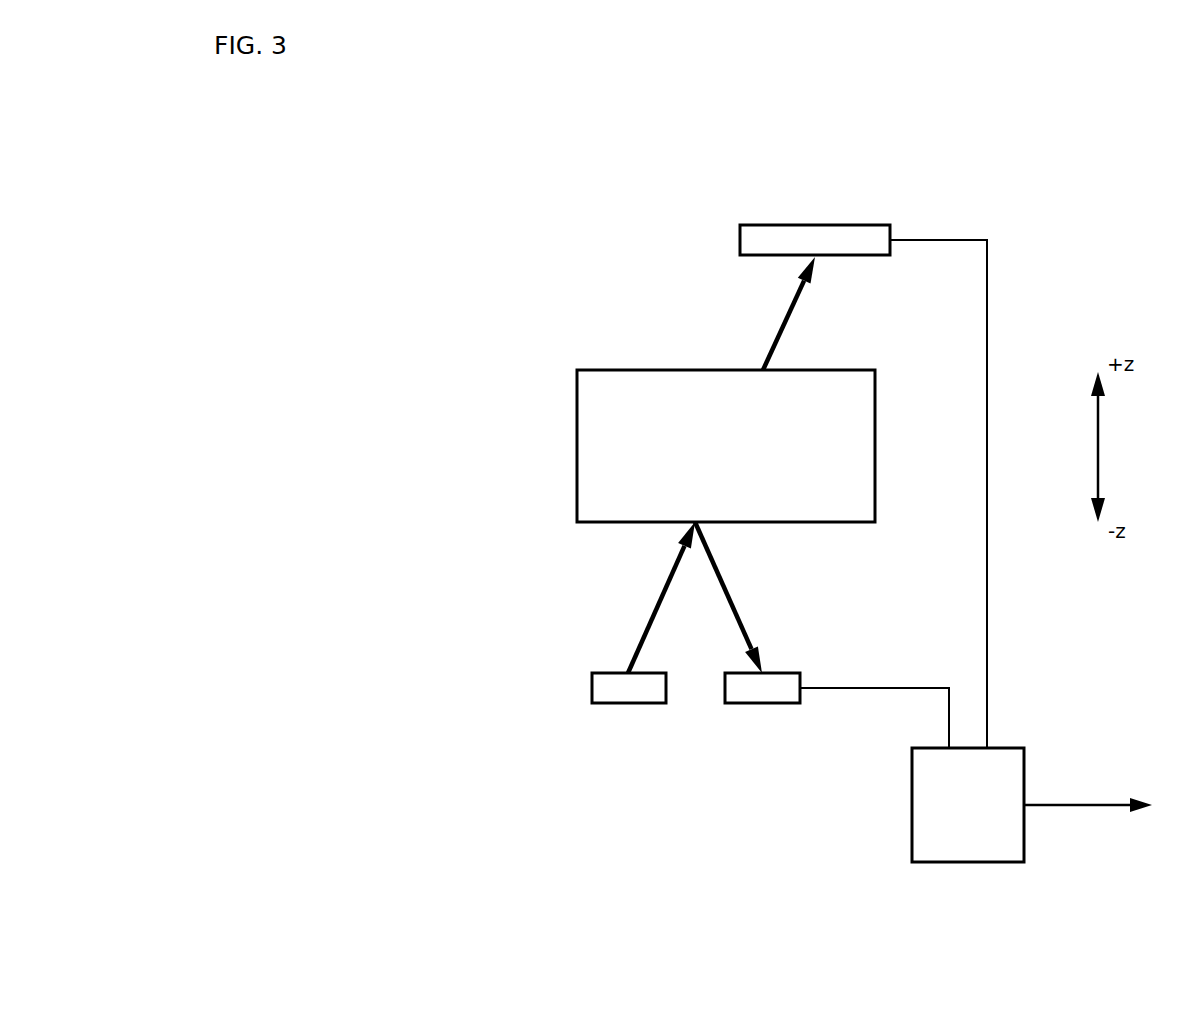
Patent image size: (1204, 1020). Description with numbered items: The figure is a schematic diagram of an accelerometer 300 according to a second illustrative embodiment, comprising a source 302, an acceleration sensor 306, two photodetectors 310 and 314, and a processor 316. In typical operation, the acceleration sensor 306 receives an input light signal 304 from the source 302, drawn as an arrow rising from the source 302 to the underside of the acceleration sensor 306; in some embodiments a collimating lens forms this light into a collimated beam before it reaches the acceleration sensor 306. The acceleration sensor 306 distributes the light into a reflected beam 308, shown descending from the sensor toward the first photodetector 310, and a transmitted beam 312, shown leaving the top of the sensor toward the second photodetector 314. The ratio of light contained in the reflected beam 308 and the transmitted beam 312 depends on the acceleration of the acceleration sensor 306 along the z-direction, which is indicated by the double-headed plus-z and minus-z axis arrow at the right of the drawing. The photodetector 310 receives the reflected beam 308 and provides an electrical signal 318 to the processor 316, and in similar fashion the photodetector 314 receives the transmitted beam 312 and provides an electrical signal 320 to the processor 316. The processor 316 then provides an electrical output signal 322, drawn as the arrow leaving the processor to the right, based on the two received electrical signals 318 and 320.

The accelerometer 300 is at (445, 192).
The source 302 is at (604, 710).
The input light signal 304 is at (633, 597).
The acceleration sensor 306 is at (682, 446).
The reflected beam 308 is at (758, 597).
The photodetector 310 is at (738, 710).
The transmitted beam 312 is at (756, 313).
The photodetector 314 is at (771, 226).
The processor 316 is at (924, 805).
The electrical signal 318 is at (874, 697).
The electrical signal 320 is at (963, 473).
The electrical output signal 322 is at (1088, 783).